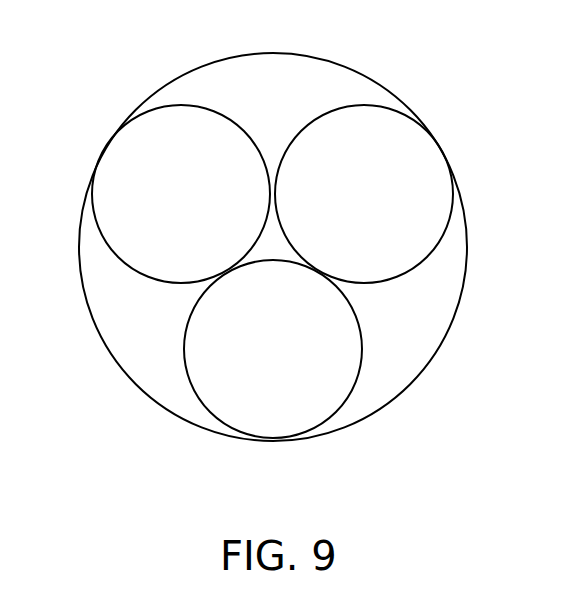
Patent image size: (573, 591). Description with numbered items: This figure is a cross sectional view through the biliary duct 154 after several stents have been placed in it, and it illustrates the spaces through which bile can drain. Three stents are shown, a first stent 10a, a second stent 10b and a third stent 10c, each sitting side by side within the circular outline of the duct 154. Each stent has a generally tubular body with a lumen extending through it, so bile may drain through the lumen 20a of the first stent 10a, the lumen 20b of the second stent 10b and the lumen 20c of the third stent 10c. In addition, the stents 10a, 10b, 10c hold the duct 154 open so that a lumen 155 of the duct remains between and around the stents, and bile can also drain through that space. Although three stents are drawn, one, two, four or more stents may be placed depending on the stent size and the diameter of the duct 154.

The biliary duct 154 is at (277, 92).
The lumen of the duct 155 is at (145, 315).
The first stent 10a is at (147, 112).
The second stent 10b is at (447, 228).
The third stent 10c is at (210, 413).
The lumen of the first stent 20a is at (145, 188).
The lumen of the second stent 20b is at (390, 168).
The lumen of the third stent 20c is at (292, 388).